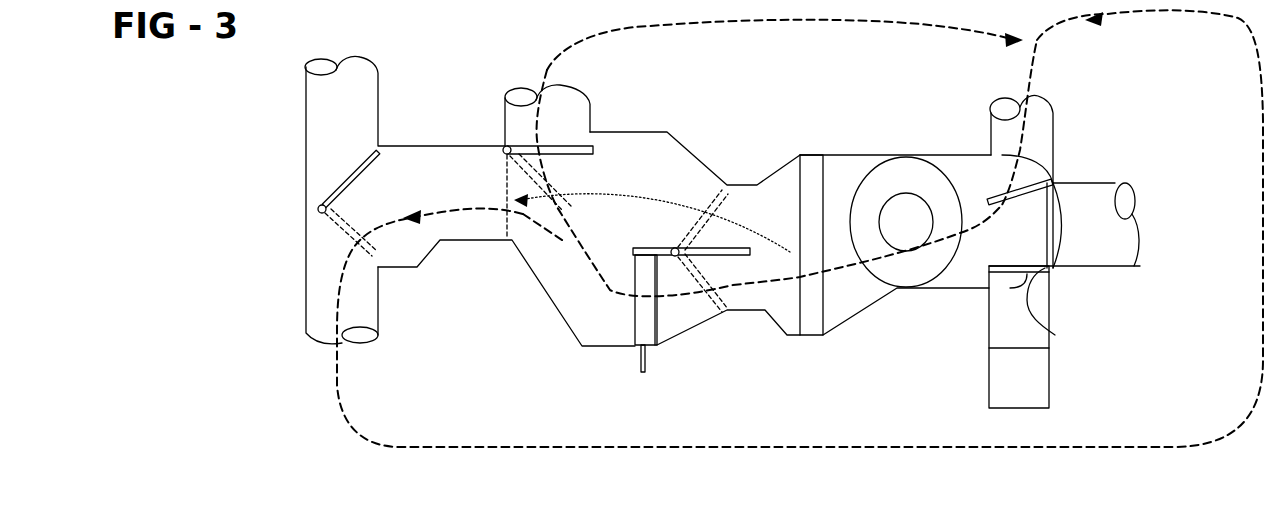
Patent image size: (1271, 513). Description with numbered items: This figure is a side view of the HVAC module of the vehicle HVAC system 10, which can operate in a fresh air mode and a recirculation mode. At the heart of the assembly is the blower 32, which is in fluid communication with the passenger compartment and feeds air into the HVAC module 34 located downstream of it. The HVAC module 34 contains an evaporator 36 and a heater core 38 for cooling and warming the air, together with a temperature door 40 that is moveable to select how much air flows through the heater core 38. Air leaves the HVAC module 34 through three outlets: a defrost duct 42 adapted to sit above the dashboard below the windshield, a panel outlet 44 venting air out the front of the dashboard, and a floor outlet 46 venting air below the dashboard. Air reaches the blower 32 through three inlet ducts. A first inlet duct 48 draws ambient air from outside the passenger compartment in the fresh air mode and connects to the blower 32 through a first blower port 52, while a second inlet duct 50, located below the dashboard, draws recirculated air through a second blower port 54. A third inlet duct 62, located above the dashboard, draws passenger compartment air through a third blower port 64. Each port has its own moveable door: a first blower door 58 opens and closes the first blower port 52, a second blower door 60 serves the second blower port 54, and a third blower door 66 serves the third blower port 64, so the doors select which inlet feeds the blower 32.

The HVAC system 10 is at (292, 390).
The blower 32 is at (938, 282).
The HVAC module 34 is at (768, 172).
The evaporator 36 is at (807, 336).
The heater core 38 is at (633, 343).
The temperature door 40 is at (745, 256).
The defrost duct 42 is at (377, 90).
The panel outlet 44 is at (590, 120).
The floor outlet 46 is at (305, 335).
The first inlet duct 48 is at (1115, 184).
The second inlet duct 50 is at (1050, 300).
The first blower port 52 is at (1054, 183).
The second blower port 54 is at (1050, 269).
The first blower door 58 is at (1063, 210).
The second blower door 60 is at (1055, 335).
The third inlet duct 62 is at (1040, 97).
The third blower port 64 is at (997, 160).
The third blower door 66 is at (1051, 182).